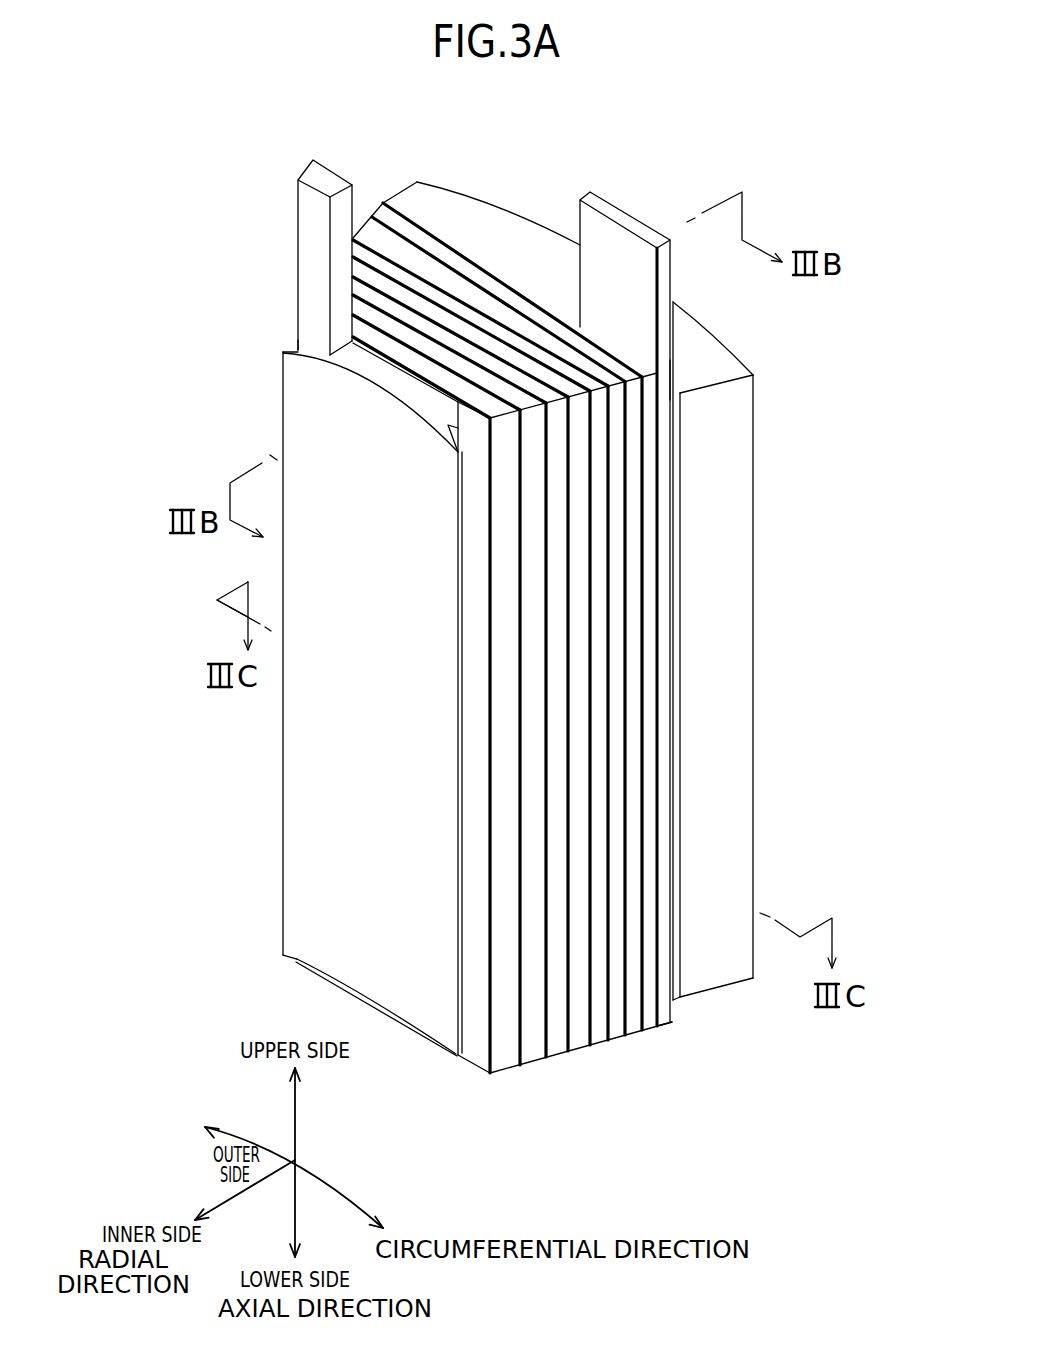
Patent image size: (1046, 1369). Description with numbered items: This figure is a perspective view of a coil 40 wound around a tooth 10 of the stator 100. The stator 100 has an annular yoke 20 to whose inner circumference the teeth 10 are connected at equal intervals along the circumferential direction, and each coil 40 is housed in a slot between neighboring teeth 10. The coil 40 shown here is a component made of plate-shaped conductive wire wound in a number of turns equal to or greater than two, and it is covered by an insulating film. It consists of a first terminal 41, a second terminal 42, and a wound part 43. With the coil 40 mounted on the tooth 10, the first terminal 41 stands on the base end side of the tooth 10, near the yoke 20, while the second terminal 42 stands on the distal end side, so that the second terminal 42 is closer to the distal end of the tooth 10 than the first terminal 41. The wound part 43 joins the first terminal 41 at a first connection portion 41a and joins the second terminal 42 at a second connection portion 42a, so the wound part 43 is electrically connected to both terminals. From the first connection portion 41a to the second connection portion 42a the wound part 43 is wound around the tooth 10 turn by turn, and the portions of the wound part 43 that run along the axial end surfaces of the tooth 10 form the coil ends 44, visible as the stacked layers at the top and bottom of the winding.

The stator 100 is at (218, 152).
The tooth 10 is at (298, 410).
The annular yoke 20 is at (470, 212).
The coil 40 is at (672, 1062).
The first terminal 41 is at (624, 218).
The first connection portion 41a is at (680, 375).
The second terminal 42 is at (323, 177).
The second connection portion 42a is at (293, 335).
The wound part 43 is at (690, 660).
The coil ends 44 is at (405, 250).